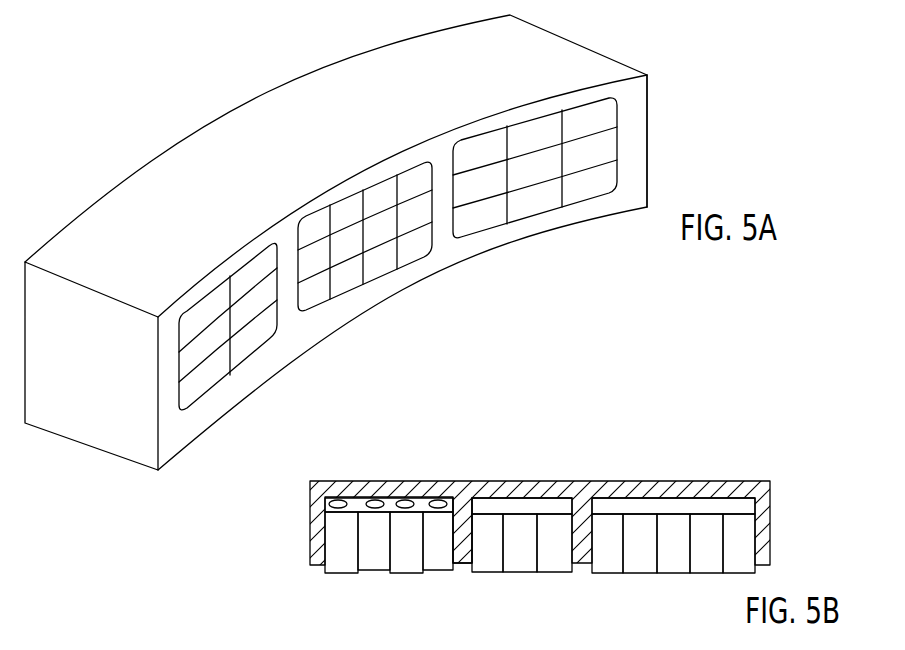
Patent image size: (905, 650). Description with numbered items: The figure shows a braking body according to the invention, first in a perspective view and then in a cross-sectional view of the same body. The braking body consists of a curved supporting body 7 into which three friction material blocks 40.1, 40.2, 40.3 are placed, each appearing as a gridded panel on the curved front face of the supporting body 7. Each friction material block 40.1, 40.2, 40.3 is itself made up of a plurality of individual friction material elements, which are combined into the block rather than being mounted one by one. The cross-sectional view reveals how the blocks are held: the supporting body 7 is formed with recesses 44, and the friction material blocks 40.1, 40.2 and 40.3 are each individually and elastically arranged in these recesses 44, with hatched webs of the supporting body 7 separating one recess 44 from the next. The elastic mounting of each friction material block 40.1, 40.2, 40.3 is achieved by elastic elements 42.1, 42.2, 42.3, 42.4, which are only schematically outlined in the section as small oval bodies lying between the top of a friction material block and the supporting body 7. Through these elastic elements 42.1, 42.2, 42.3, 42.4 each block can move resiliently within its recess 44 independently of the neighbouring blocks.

In FIG. 5A, the supporting body 7 is at (267, 117).
In FIG. 5B, the supporting body 7 is at (762, 517).
In FIG. 5A, the friction material block 40.1 is at (540, 208).
In FIG. 5B, the friction material block 40.1 is at (673, 527).
In FIG. 5A, the friction material block 40.2 is at (412, 253).
In FIG. 5B, the friction material block 40.2 is at (523, 527).
In FIG. 5A, the friction material block 40.3 is at (290, 349).
In FIG. 5B, the friction material block 40.3 is at (367, 539).
In FIG. 5A, the recess 44 is at (617, 143).
In FIG. 5B, the recess 44 is at (457, 543).
In FIG. 5B, the elastic element 42.1 is at (338, 499).
In FIG. 5B, the elastic element 42.2 is at (375, 499).
In FIG. 5B, the elastic element 42.3 is at (407, 499).
In FIG. 5B, the elastic element 42.4 is at (440, 499).